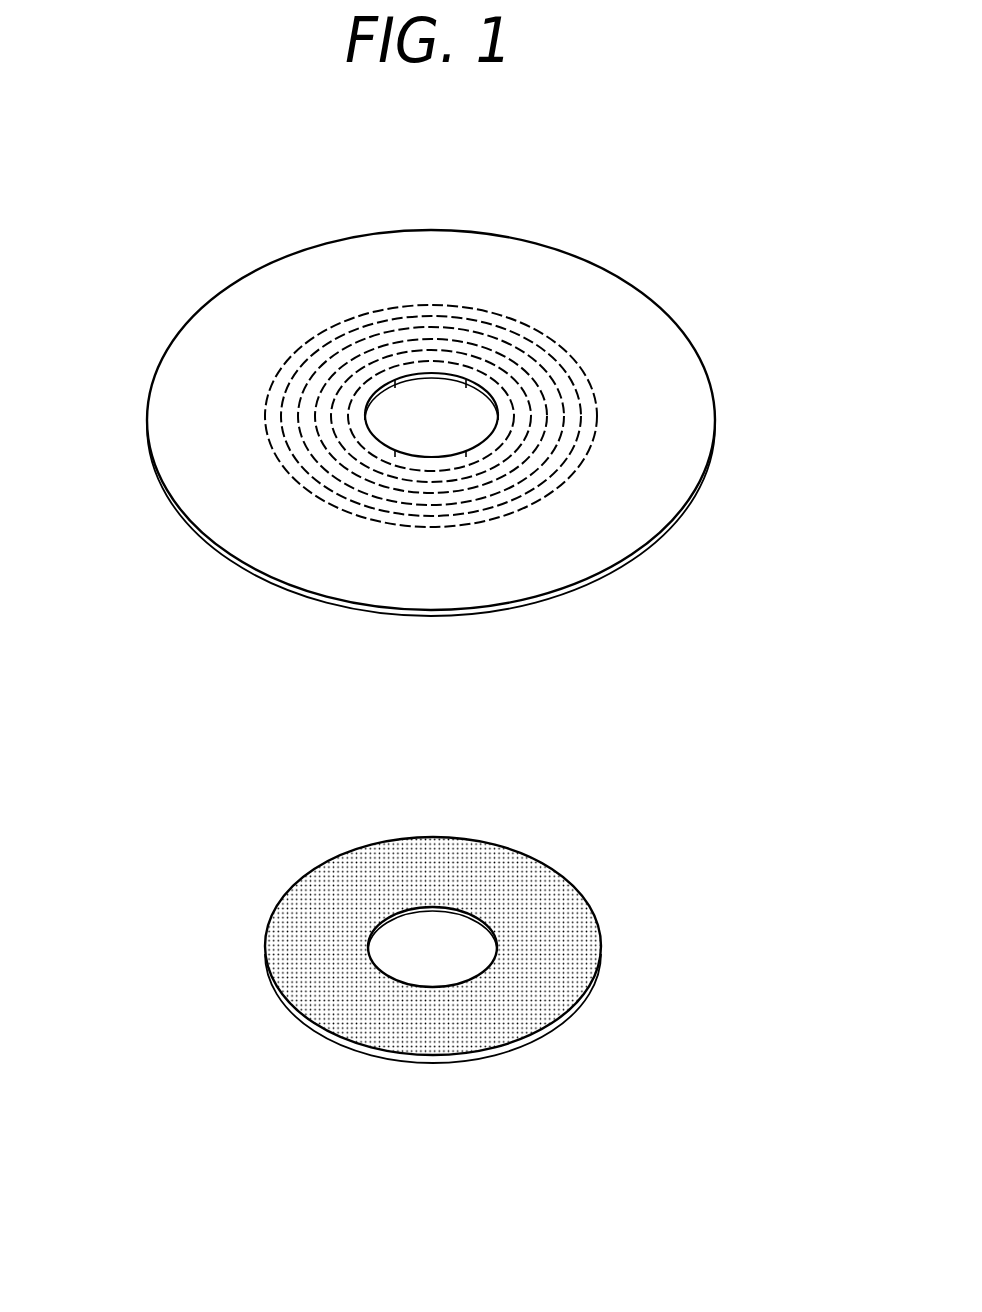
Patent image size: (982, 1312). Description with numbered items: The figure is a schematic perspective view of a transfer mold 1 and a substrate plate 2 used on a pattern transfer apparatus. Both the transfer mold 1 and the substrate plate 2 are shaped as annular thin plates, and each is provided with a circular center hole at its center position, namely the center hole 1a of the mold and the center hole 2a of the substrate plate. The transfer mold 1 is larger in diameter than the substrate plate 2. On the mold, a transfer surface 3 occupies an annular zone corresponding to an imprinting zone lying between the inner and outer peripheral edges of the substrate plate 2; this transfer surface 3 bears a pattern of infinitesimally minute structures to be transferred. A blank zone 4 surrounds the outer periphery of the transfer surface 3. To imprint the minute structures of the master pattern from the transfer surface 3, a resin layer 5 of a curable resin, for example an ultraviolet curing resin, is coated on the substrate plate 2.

The transfer mold 1 is at (439, 394).
The circular center hole 1a is at (438, 435).
The transfer surface 3 is at (327, 363).
The blank zone 4 is at (548, 557).
The substrate plate 2 is at (425, 993).
The circular center hole 2a is at (458, 930).
The resin layer 5 is at (310, 1003).